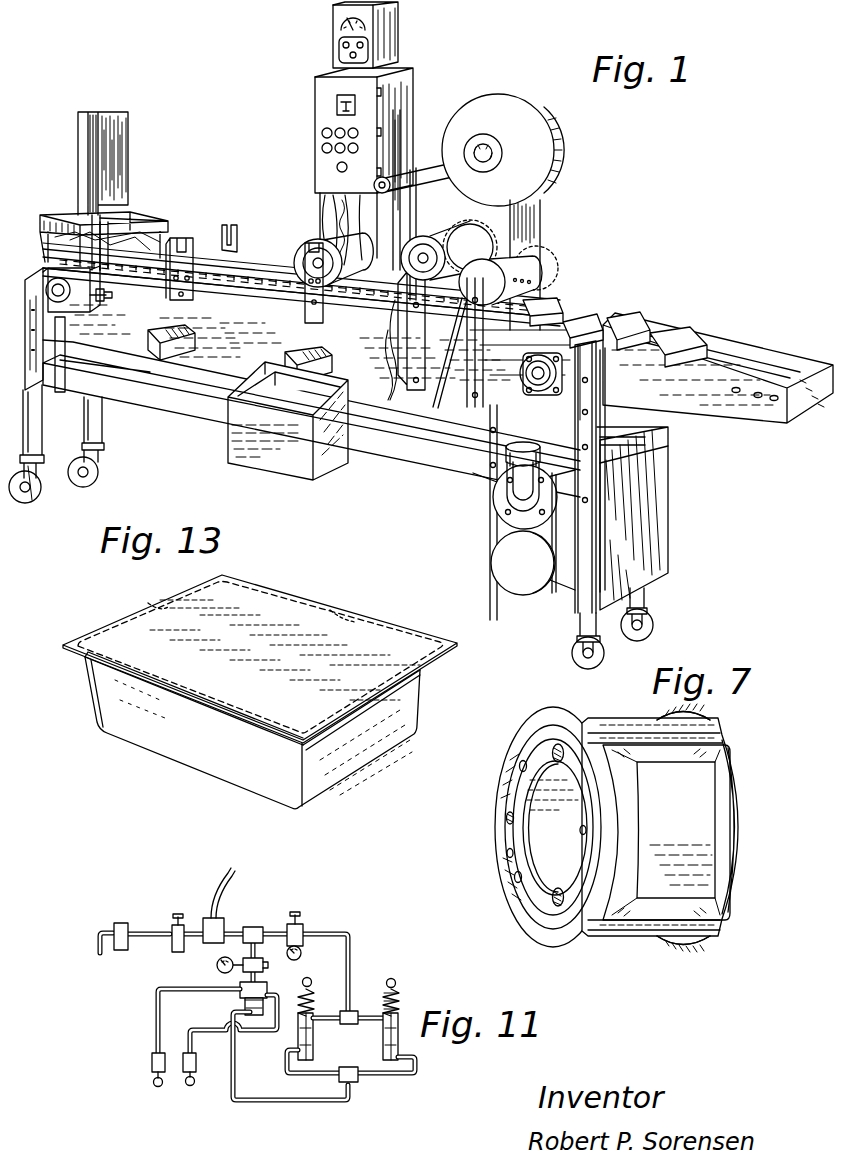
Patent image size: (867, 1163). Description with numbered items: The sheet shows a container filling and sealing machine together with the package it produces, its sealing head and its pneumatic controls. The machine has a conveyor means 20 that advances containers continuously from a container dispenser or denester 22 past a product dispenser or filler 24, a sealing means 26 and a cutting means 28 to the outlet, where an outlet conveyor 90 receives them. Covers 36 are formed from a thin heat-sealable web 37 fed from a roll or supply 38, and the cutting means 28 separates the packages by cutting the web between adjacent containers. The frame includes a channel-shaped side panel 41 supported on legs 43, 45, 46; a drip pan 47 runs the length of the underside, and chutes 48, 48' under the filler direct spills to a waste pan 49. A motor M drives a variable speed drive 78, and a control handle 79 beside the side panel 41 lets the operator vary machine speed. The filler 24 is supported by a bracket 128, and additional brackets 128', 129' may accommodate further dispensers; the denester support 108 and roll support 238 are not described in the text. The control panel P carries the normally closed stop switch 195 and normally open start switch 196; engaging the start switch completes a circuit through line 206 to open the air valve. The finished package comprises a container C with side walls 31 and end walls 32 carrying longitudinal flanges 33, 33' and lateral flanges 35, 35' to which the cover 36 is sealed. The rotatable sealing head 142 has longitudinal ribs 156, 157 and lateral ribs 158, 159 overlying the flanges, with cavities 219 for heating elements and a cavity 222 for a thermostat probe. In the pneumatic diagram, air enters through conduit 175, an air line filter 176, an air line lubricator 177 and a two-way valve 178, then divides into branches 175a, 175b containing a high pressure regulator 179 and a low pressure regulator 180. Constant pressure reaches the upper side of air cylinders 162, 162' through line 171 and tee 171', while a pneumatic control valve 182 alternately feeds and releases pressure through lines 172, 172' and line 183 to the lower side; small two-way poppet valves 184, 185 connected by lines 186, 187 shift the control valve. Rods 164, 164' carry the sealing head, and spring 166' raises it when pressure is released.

In FIG. 1, the conveyor means 20 is at (250, 266).
In FIG. 1, the container dispenser or denester 22 is at (130, 157).
In FIG. 1, the product dispenser or filler 24 is at (305, 247).
In FIG. 1, the sealing means 26 is at (496, 232).
In FIG. 1, the cutting means 28 is at (545, 265).
In FIG. 13, the side walls 31 is at (148, 733).
In FIG. 13, the end walls 32 is at (372, 740).
In FIG. 13, the longitudinal rim or flange 33 is at (167, 698).
In FIG. 13, the longitudinal rim or flange 33' is at (352, 601).
In FIG. 13, the laterally extending rim or flange 35 is at (385, 707).
In FIG. 13, the laterally extending rim or flange 35' is at (126, 596).
In FIG. 13, the cover 36 is at (275, 612).
In FIG. 1, the web 37 is at (416, 180).
In FIG. 1, the roll or supply 38 is at (545, 146).
In FIG. 1, the side panel 41 is at (218, 318).
In FIG. 1, the leg 43 is at (575, 595).
In FIG. 1, the leg 45 is at (41, 428).
In FIG. 1, the leg 46 is at (102, 429).
In FIG. 1, the drip pan 47 is at (191, 402).
In FIG. 1, the chute 48 is at (316, 356).
In FIG. 1, the chute 48' is at (155, 329).
In FIG. 1, the waste pan 49 is at (245, 455).
In FIG. 1, the variable speed drive 78 is at (510, 554).
In FIG. 1, the control handle 79 is at (520, 443).
In FIG. 1, the outlet conveyor 90 is at (752, 368).
In FIG. 1, the container magazine post 108 is at (122, 128).
In FIG. 1, the bracket 128 is at (282, 283).
In FIG. 1, the additional bracket 128' is at (174, 237).
In FIG. 1, the additional bracket 129' is at (218, 213).
In FIG. 7, the sealing head 142 is at (751, 780).
In FIG. 7, the longitudinally extending rib 156 is at (740, 878).
In FIG. 7, the longitudinally extending rib 157 is at (622, 838).
In FIG. 7, the laterally extending rib 158 is at (672, 746).
In FIG. 7, the laterally extending rib 159 is at (618, 727).
In FIG. 11, the air cylinder 162 is at (274, 1036).
In FIG. 11, the air cylinder 162' is at (414, 1036).
In FIG. 11, the rod 164 is at (320, 979).
In FIG. 11, the rod 164' is at (378, 984).
In FIG. 11, the compression type spring 166' is at (410, 980).
In FIG. 11, the line 171 is at (348, 1039).
In FIG. 11, the tee fitting 171' is at (361, 1028).
In FIG. 11, the line 172 is at (325, 1073).
In FIG. 11, the line 172' is at (366, 1094).
In FIG. 11, the supply conduit 175 is at (100, 945).
In FIG. 11, the branch 175a is at (264, 930).
In FIG. 11, the branch 175b is at (250, 950).
In FIG. 11, the air line filter 176 is at (118, 924).
In FIG. 11, the air line lubricator 177 is at (172, 924).
In FIG. 11, the two-way valve 178 is at (222, 924).
In FIG. 11, the high pressure regulator 179 is at (302, 930).
In FIG. 11, the low pressure regulator 180 is at (266, 966).
In FIG. 11, the pneumatic control valve 182 is at (246, 996).
In FIG. 11, the line 183 is at (257, 1100).
In FIG. 11, the two-way poppet valve 184 is at (150, 1062).
In FIG. 11, the two-way poppet valve 185 is at (190, 1082).
In FIG. 11, the line 186 is at (156, 1006).
In FIG. 11, the line 187 is at (190, 1048).
In FIG. 1, the stop switch 195 is at (321, 150).
In FIG. 1, the start switch 196 is at (336, 168).
In FIG. 11, the line 206 is at (228, 886).
In FIG. 7, the cavity 219 is at (555, 753).
In FIG. 7, the cavity 222 is at (505, 853).
In FIG. 1, the roll support post 238 is at (528, 220).
In FIG. 13, the container C is at (210, 782).
In FIG. 1, the motor M is at (500, 494).
In FIG. 1, the control panel P is at (327, 90).